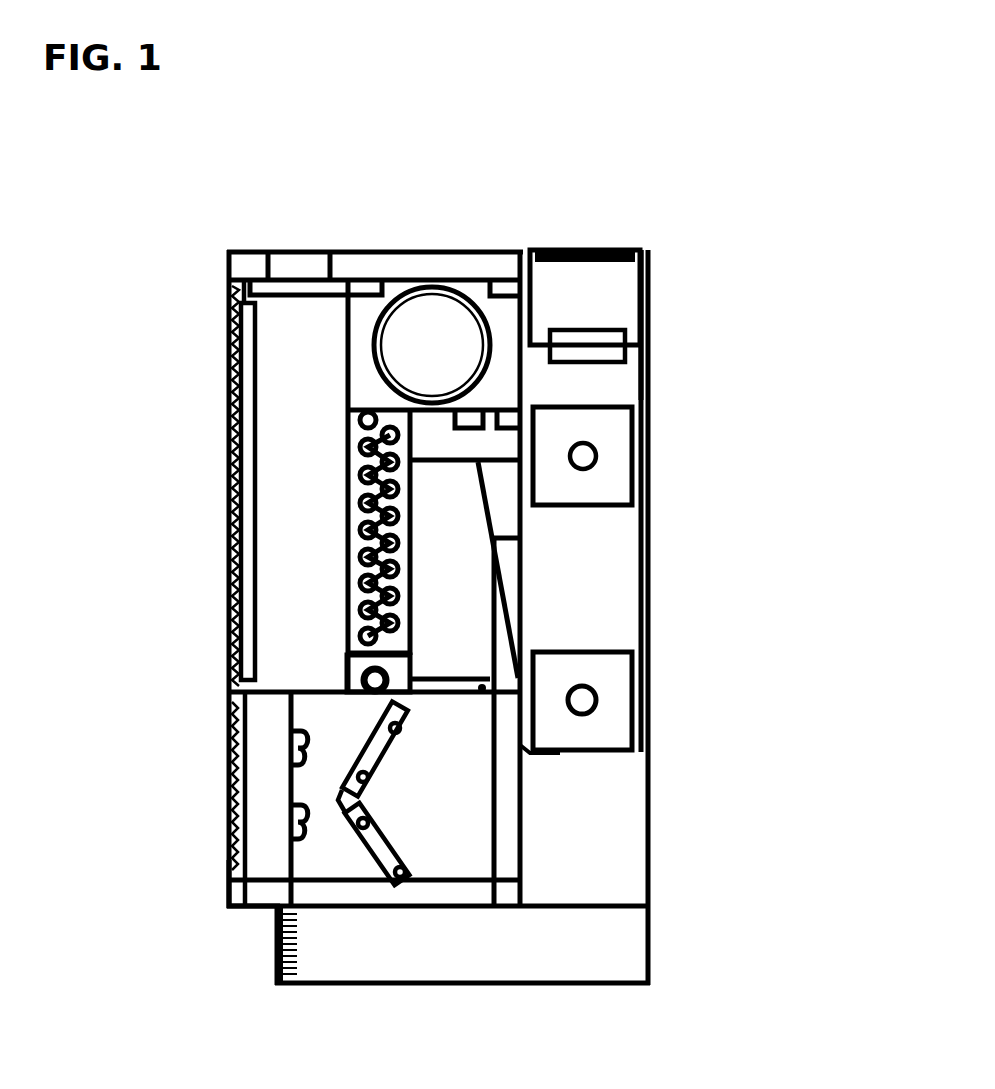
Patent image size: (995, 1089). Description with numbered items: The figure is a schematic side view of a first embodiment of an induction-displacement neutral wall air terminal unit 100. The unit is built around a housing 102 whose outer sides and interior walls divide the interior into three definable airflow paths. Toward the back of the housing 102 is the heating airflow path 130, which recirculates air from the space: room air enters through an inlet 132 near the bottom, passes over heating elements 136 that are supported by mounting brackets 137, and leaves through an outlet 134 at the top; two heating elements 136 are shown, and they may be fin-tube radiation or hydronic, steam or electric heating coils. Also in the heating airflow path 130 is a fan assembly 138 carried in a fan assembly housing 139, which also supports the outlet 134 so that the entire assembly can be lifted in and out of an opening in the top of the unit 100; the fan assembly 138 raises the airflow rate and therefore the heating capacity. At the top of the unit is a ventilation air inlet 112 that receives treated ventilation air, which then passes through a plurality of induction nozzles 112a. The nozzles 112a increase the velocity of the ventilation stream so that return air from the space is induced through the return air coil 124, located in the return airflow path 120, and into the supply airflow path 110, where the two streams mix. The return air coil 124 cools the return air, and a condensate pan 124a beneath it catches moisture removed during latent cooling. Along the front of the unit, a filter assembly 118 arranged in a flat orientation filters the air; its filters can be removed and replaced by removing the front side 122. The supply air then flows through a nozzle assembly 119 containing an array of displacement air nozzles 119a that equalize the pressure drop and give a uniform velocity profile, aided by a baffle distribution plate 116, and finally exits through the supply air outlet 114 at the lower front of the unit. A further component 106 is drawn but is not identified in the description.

The air terminal unit 100 is at (197, 213).
The housing 102 is at (342, 252).
The lever housing 106 is at (522, 574).
The supply airflow path 110 is at (447, 830).
The ventilation air inlet 112 is at (468, 290).
The induction nozzles 112a is at (463, 428).
The supply air outlet 114 is at (228, 862).
The baffle distribution plate 116 is at (405, 862).
The filter assembly 118 is at (250, 450).
The nozzle assembly 119 is at (270, 810).
The displacement air nozzles 119a is at (300, 745).
The return airflow path 120 is at (288, 592).
The front side 122 is at (230, 405).
The return air coil 124 is at (347, 520).
The condensate pan 124a is at (412, 650).
The heating airflow path 130 is at (555, 925).
The inlet 132 is at (275, 958).
The outlet 134 is at (550, 250).
The heating elements 136 is at (600, 406).
The mounting brackets 137 is at (622, 753).
The fan assembly 138 is at (628, 355).
The fan assembly housing 139 is at (645, 323).